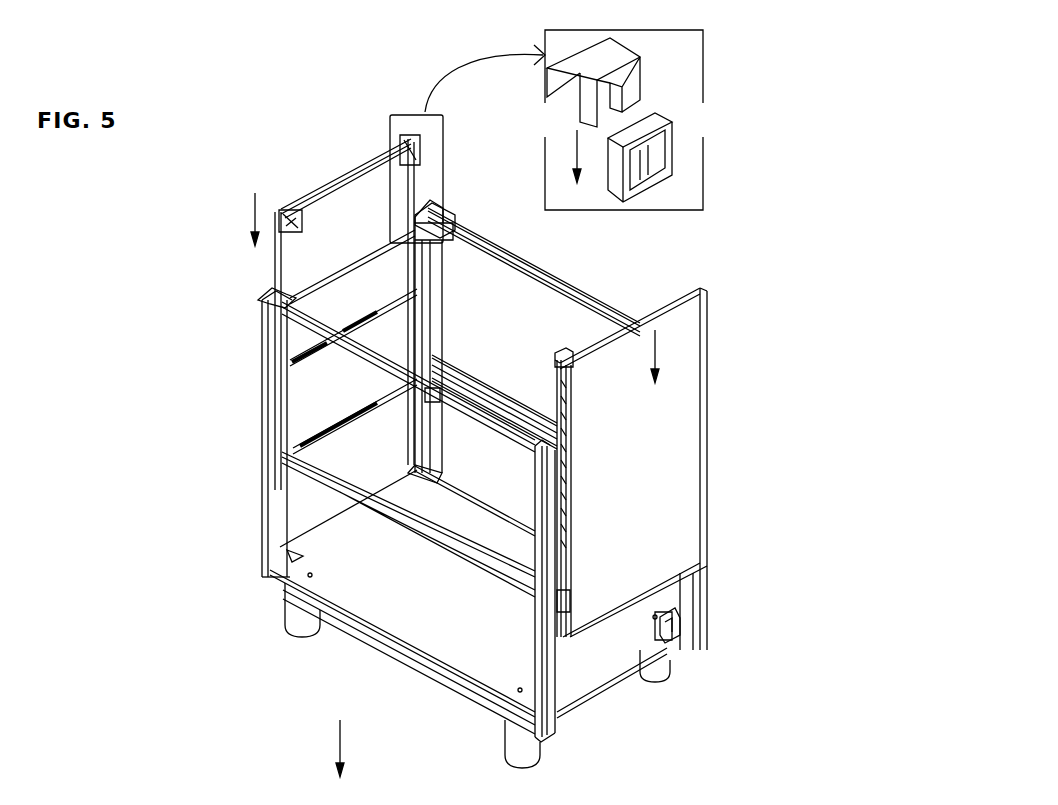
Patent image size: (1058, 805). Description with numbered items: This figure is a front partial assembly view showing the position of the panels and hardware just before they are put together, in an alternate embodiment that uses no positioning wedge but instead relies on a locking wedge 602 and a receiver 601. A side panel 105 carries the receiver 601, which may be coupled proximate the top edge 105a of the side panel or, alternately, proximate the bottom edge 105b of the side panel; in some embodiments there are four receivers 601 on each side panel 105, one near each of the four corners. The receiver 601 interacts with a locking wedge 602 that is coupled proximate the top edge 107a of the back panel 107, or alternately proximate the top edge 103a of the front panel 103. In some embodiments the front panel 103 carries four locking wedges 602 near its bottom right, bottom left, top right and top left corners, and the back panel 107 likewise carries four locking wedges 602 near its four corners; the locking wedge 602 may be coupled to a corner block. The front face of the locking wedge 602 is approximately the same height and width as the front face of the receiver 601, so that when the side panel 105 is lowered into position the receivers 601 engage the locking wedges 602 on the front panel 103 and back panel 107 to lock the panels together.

The front panel 103 is at (268, 466).
The top edge of front panel 103a is at (264, 294).
The side panel 105 is at (342, 197).
The top edge of side panel 105a is at (377, 157).
The bottom edge of side panel 105b is at (298, 441).
The back panel 107 is at (534, 298).
The top edge of back panel 107a is at (478, 231).
The receiver 601 is at (284, 207).
The locking wedge 602 is at (670, 628).